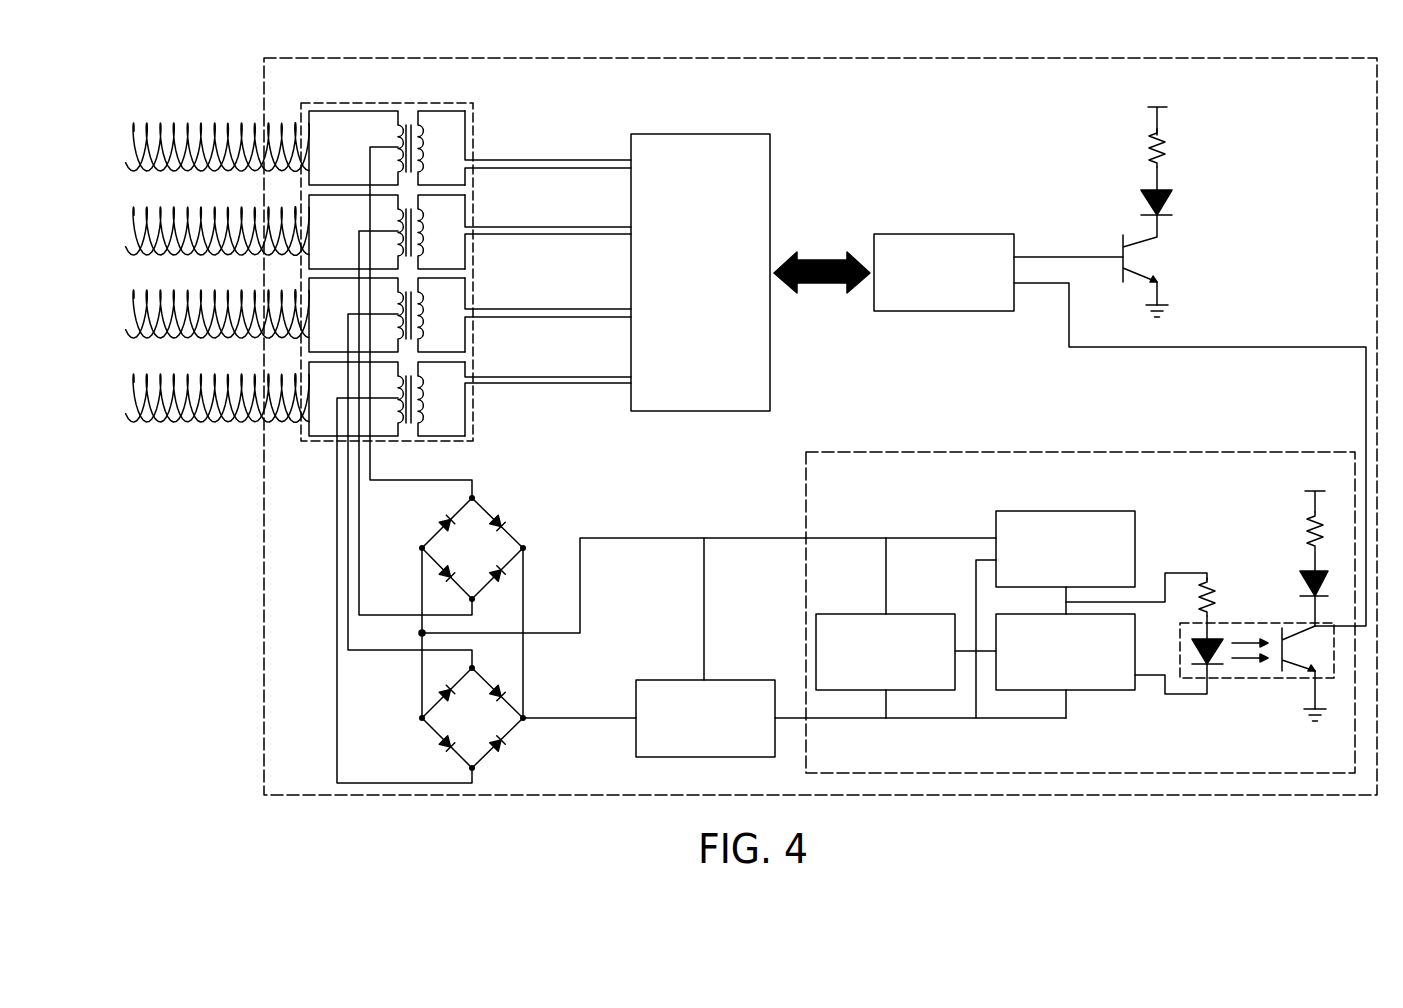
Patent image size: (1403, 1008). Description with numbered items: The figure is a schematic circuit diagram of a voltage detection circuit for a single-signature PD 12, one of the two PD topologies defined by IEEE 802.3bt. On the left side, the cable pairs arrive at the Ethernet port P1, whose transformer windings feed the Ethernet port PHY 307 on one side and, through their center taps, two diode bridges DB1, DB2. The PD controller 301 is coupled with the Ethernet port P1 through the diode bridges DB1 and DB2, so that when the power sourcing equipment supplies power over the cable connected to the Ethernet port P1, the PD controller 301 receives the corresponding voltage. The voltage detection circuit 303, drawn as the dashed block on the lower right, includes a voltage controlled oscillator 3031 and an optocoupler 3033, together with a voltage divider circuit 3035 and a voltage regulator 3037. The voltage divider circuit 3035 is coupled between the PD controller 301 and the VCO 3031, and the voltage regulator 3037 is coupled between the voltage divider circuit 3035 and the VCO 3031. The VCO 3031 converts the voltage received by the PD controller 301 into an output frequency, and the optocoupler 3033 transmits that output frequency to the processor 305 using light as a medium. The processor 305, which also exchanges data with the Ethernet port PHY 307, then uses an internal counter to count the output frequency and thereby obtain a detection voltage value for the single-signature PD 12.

The single-signature PD 12 is at (262, 578).
The Ethernet port P1 is at (475, 120).
The PD controller 301 is at (670, 680).
The voltage detection circuit 303 is at (1089, 452).
The processor 305 is at (945, 234).
The Ethernet port PHY 307 is at (700, 134).
The voltage controlled oscillator 3031 is at (1108, 690).
The optocoupler 3033 is at (1249, 623).
The voltage divider circuit 3035 is at (850, 614).
The voltage regulator 3037 is at (1135, 527).
The diode bridge DB1 is at (490, 548).
The diode bridge DB2 is at (486, 724).